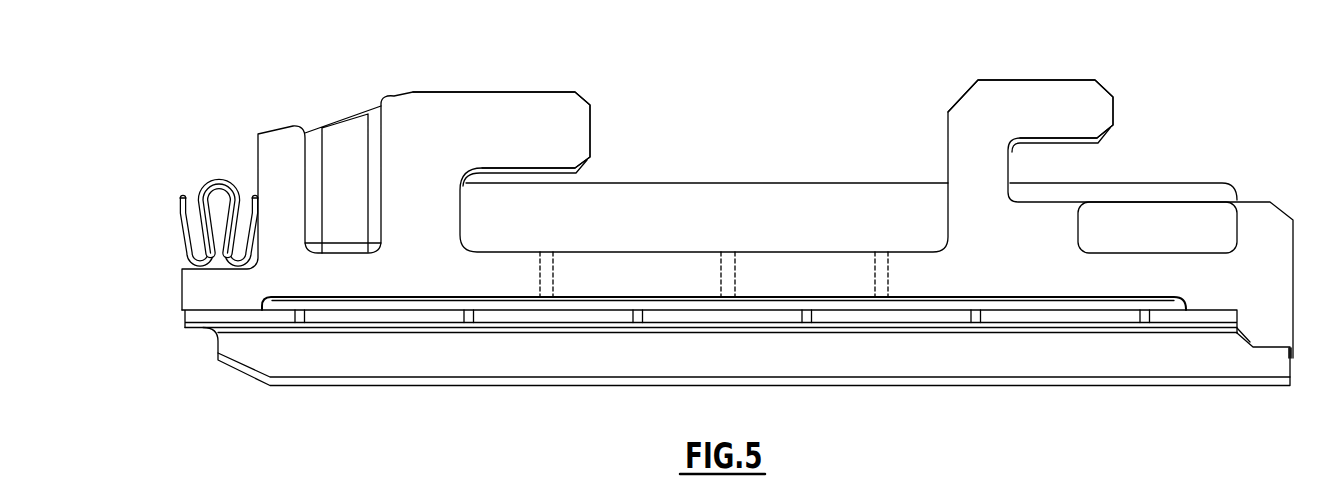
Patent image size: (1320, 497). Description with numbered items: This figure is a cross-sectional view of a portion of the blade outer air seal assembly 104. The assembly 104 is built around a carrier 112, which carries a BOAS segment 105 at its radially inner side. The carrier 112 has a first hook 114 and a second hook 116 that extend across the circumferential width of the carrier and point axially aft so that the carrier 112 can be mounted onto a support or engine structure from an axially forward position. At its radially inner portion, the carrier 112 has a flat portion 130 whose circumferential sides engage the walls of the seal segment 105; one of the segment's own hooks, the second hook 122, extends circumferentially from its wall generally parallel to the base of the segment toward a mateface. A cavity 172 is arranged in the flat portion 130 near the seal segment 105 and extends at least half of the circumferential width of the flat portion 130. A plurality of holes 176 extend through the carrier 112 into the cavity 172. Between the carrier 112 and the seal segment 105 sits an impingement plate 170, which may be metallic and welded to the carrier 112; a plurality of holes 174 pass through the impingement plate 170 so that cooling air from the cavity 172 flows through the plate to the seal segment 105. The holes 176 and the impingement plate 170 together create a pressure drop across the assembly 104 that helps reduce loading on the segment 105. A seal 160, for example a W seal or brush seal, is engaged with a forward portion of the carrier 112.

The BOAS assembly 104 is at (1204, 78).
The BOAS segment 105 is at (245, 343).
The carrier 112 is at (397, 112).
The first hook 114 is at (528, 107).
The second hook 116 is at (1060, 90).
The second hook 122 is at (961, 333).
The flat portion 130 is at (627, 280).
The seal 160 is at (178, 212).
The impingement plate 170 is at (1100, 313).
The cavity 172 is at (1025, 303).
The holes 174 is at (821, 312).
The holes 176 is at (735, 267).